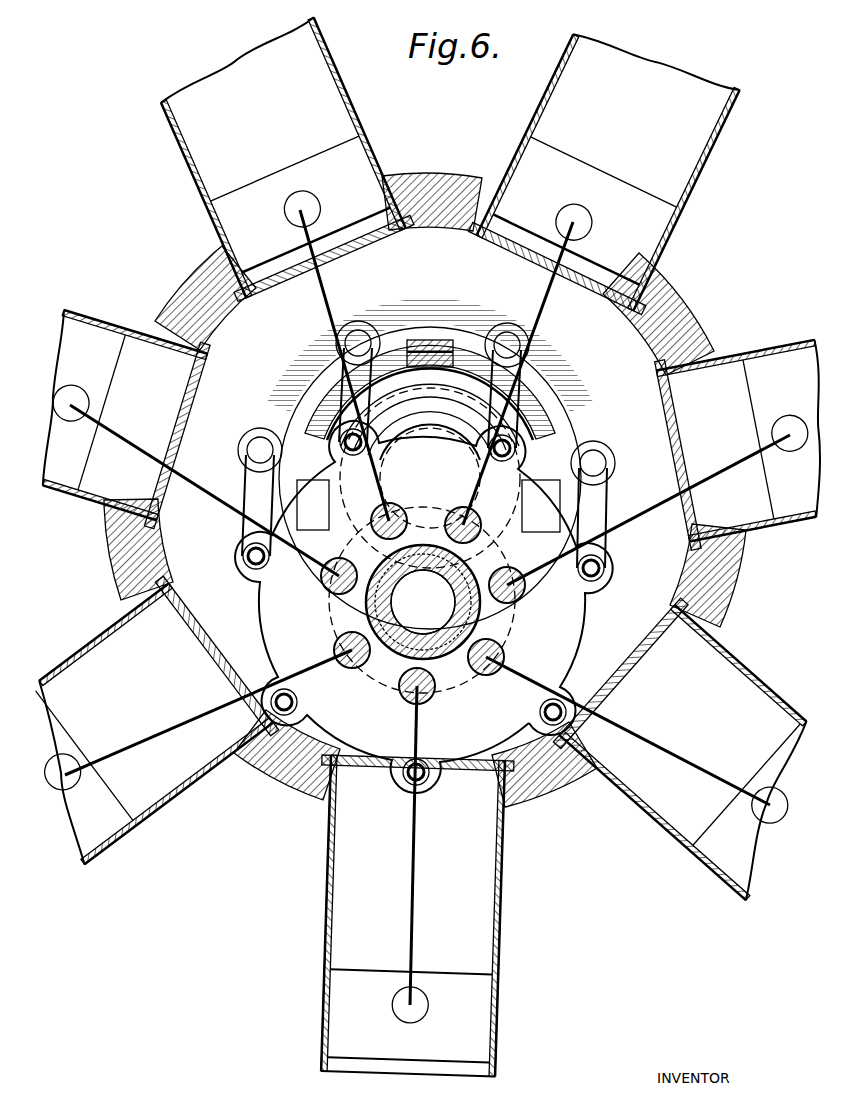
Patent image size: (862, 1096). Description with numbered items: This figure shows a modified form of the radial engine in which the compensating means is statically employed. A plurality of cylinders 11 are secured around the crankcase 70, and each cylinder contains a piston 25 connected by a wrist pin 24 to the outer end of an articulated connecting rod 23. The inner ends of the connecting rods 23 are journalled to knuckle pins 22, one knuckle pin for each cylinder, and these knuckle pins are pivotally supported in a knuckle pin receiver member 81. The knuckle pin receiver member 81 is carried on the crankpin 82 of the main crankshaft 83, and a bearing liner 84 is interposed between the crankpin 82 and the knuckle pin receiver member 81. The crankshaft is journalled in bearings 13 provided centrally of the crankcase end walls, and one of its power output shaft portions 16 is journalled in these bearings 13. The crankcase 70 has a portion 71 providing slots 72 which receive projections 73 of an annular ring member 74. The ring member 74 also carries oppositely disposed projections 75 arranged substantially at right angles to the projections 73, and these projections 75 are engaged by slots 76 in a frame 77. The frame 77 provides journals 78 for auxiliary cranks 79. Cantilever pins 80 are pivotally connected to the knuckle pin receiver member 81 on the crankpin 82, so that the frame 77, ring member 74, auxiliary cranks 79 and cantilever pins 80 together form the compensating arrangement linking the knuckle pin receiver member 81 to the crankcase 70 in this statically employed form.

The cylinders 11 is at (348, 111).
The pistons 25 is at (302, 152).
The wrist pins 24 is at (305, 204).
The journals 78 is at (358, 321).
The slots 76 is at (416, 340).
The projections 75 is at (450, 352).
The articulated connecting rods 23 is at (540, 318).
The auxiliary cranks 79 is at (343, 393).
The annular ring member 74 is at (520, 422).
The frame 77 is at (573, 403).
The cantilever pins 80 is at (346, 435).
The portion 71 is at (540, 478).
The slots 72 is at (605, 453).
The projections 73 is at (598, 496).
The power output shaft portion 16 is at (404, 445).
The bearings 13 is at (437, 442).
The knuckle pins 22 is at (462, 518).
The main crankshaft 83 is at (339, 560).
The crankpin 82 is at (462, 606).
The knuckle pin receiver member 81 is at (572, 606).
The bearing liner 84 is at (360, 605).
The crankcase 70 is at (676, 316).